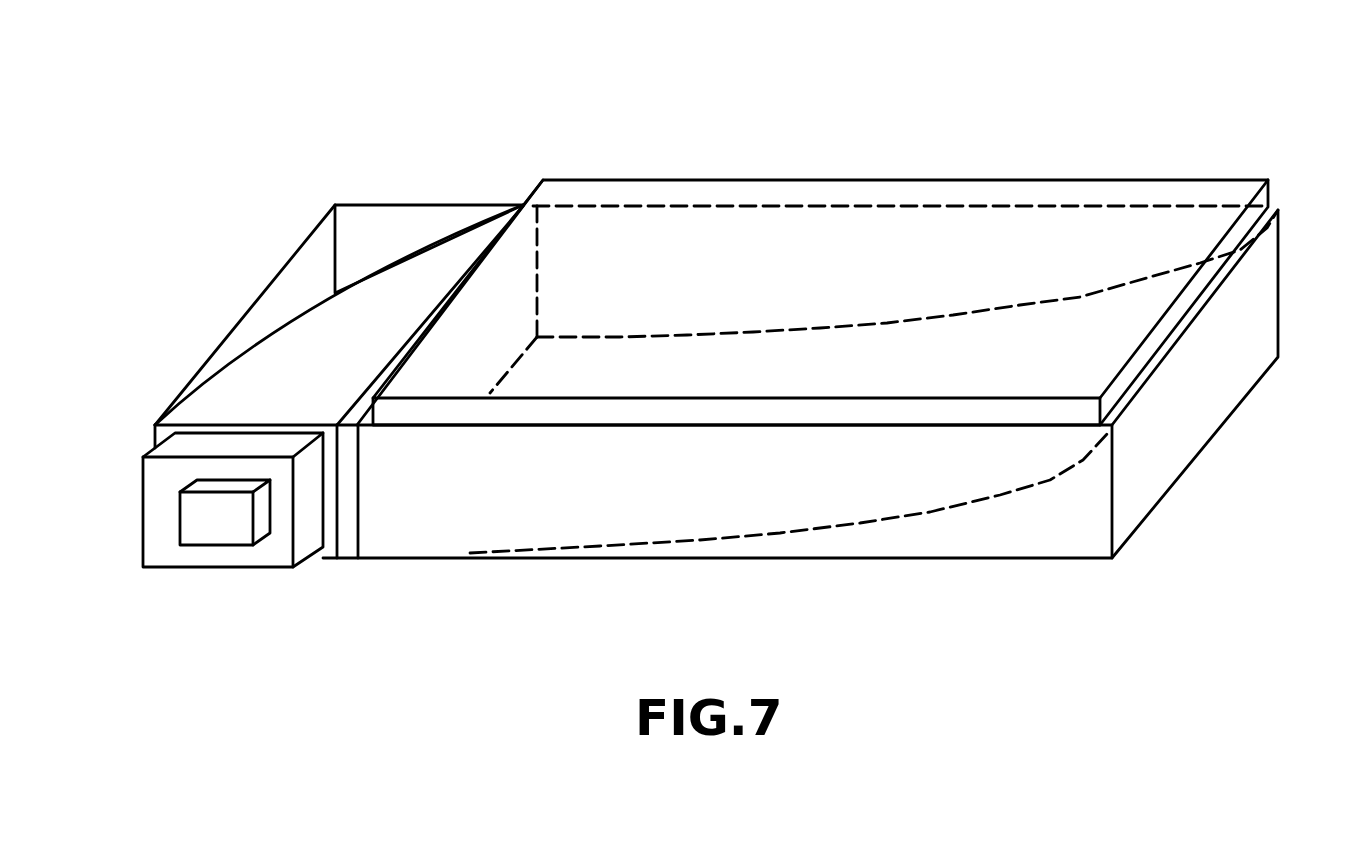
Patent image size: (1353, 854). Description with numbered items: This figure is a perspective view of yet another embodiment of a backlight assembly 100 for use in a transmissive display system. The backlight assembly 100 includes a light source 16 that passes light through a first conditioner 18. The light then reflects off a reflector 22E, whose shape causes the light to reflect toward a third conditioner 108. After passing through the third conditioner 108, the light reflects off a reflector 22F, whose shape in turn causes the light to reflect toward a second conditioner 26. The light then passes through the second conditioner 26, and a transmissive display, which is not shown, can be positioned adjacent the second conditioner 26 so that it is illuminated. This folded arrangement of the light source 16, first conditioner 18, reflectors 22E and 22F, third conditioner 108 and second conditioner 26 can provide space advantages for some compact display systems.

The backlight assembly 100 is at (888, 112).
The second conditioner 26 is at (1272, 198).
The reflector 22E is at (380, 302).
The reflector 22F is at (950, 509).
The third conditioner 108 is at (348, 560).
The first conditioner 18 is at (140, 498).
The light source 16 is at (207, 547).